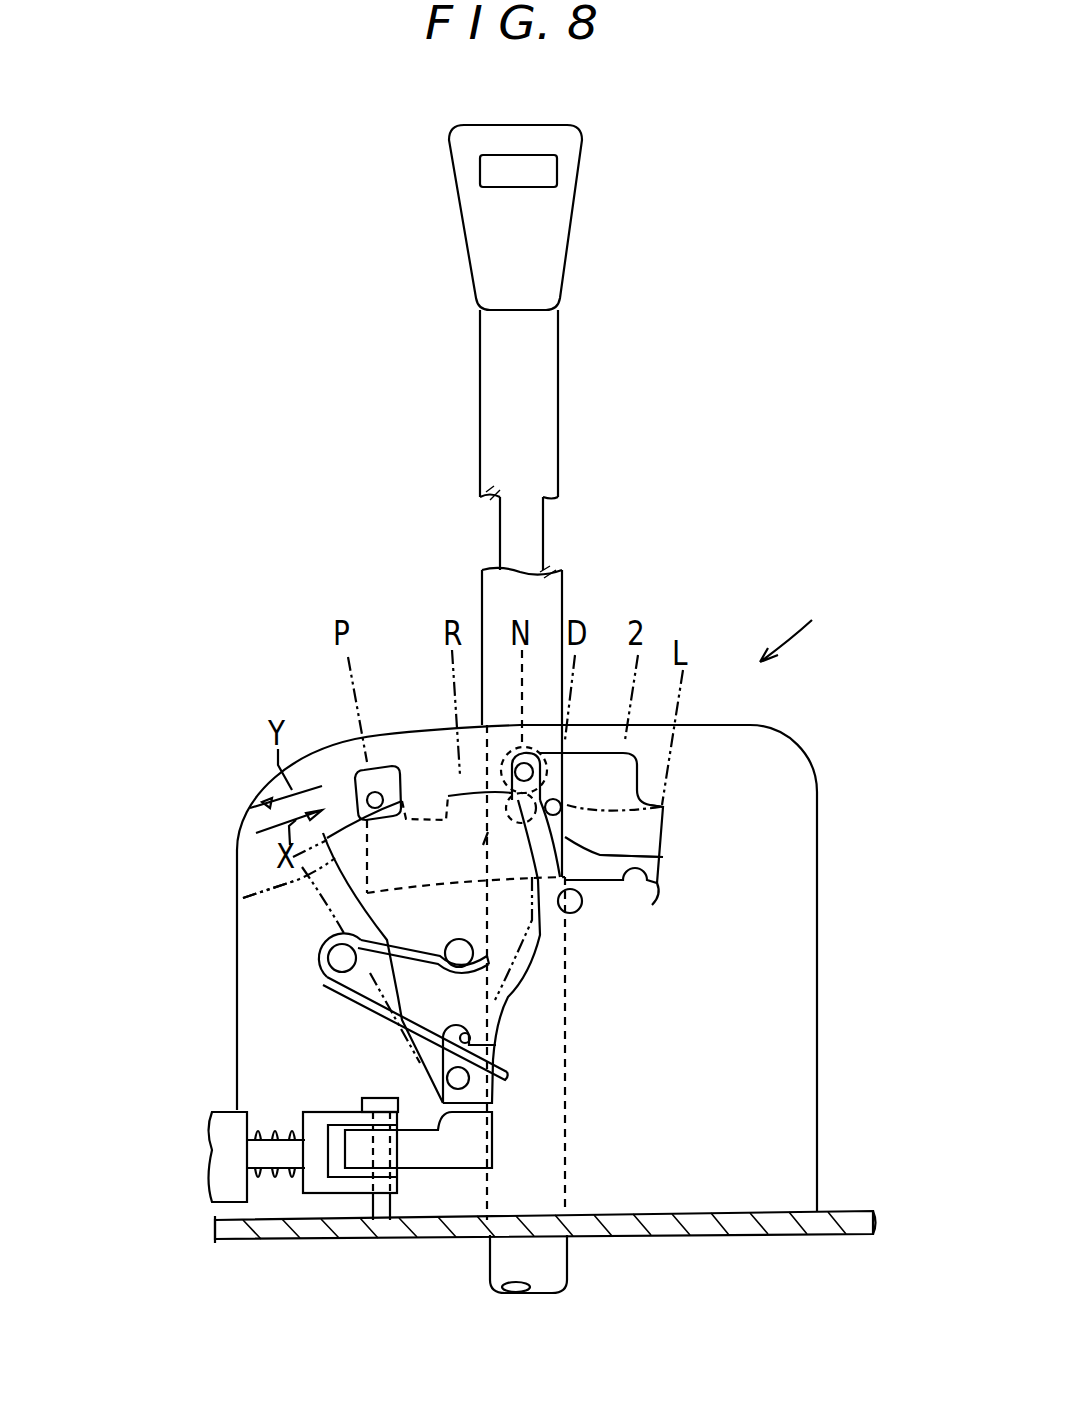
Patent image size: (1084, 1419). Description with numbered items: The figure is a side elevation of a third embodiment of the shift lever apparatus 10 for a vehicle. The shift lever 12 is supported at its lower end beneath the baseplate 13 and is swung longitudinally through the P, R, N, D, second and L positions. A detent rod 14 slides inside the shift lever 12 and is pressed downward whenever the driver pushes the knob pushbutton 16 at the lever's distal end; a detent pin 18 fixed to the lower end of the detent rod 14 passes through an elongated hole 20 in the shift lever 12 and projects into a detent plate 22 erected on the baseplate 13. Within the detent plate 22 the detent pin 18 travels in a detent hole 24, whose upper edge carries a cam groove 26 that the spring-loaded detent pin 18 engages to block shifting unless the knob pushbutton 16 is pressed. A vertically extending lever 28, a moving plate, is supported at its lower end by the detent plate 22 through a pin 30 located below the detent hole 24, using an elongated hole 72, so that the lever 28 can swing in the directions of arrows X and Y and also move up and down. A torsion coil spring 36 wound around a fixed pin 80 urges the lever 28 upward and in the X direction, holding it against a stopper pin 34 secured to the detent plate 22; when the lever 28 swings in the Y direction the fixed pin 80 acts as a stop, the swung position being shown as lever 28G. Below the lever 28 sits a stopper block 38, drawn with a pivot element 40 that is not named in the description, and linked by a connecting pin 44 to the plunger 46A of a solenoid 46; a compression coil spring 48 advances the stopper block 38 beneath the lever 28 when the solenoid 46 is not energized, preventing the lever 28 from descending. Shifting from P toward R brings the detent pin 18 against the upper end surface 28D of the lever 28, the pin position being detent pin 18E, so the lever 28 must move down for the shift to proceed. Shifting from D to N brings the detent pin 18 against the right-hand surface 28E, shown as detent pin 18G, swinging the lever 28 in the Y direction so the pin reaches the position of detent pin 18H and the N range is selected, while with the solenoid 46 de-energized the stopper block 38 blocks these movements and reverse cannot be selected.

The shift lever apparatus 10 is at (804, 623).
The shift lever 12 is at (538, 418).
The baseplate 13 is at (680, 1228).
The detent rod 14 is at (525, 532).
The knob pushbutton 16 is at (538, 172).
The detent pin 18 is at (545, 770).
The detent pin (state) 18E is at (365, 782).
The detent pin (state) 18G is at (664, 807).
The detent pin (state) 18H is at (483, 845).
The elongated hole 20 is at (560, 812).
The detent plate 22 is at (790, 842).
The detent hole 24 is at (657, 885).
The cam groove 26 is at (600, 755).
The lever 28 is at (548, 932).
The upper end surface 28D is at (423, 800).
The right-hand surface 28E is at (663, 857).
The lever (swung state) 28G is at (243, 898).
The pin 30 is at (495, 1090).
The stopper pin 34 is at (583, 905).
The torsion coil spring 36 is at (345, 993).
The stopper block 38 is at (455, 1147).
The pivot pin 40 is at (378, 1098).
The connecting pin 44 is at (405, 1220).
The solenoid 46 is at (212, 1178).
The plunger 46A is at (328, 1195).
The compression coil spring 48 is at (287, 1128).
The hole 72 is at (470, 1040).
The fixed pin 80 is at (335, 955).